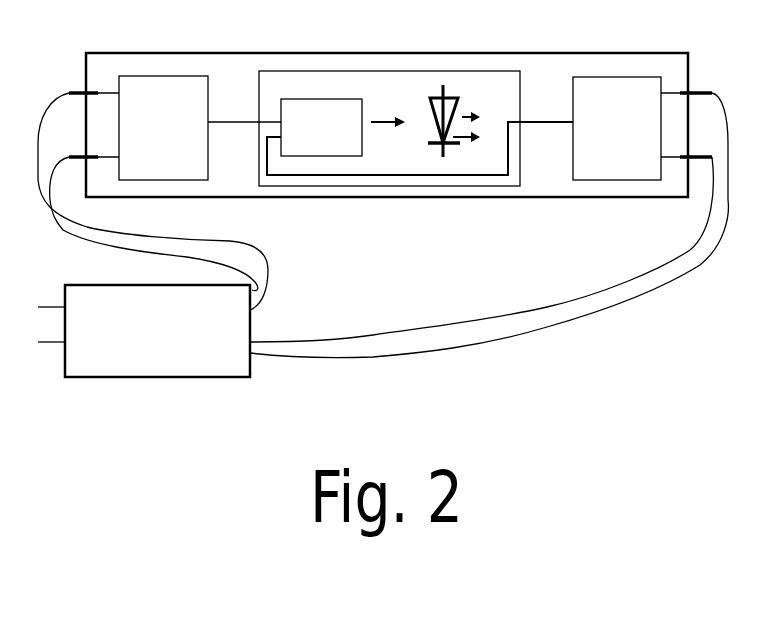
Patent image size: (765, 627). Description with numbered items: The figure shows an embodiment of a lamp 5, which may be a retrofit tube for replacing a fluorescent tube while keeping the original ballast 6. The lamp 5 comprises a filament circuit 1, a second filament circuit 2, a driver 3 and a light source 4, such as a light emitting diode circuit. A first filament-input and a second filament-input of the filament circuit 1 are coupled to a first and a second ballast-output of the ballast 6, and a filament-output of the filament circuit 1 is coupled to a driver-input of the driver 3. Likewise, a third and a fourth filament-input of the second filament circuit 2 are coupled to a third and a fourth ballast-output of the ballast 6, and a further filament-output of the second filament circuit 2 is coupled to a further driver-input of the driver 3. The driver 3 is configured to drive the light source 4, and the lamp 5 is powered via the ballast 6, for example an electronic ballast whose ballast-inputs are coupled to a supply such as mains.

The filament circuit 1 is at (147, 88).
The second filament circuit 2 is at (627, 93).
The driver 3 is at (316, 108).
The light source 4 is at (448, 107).
The lamp 5 is at (545, 197).
The ballast 6 is at (97, 377).